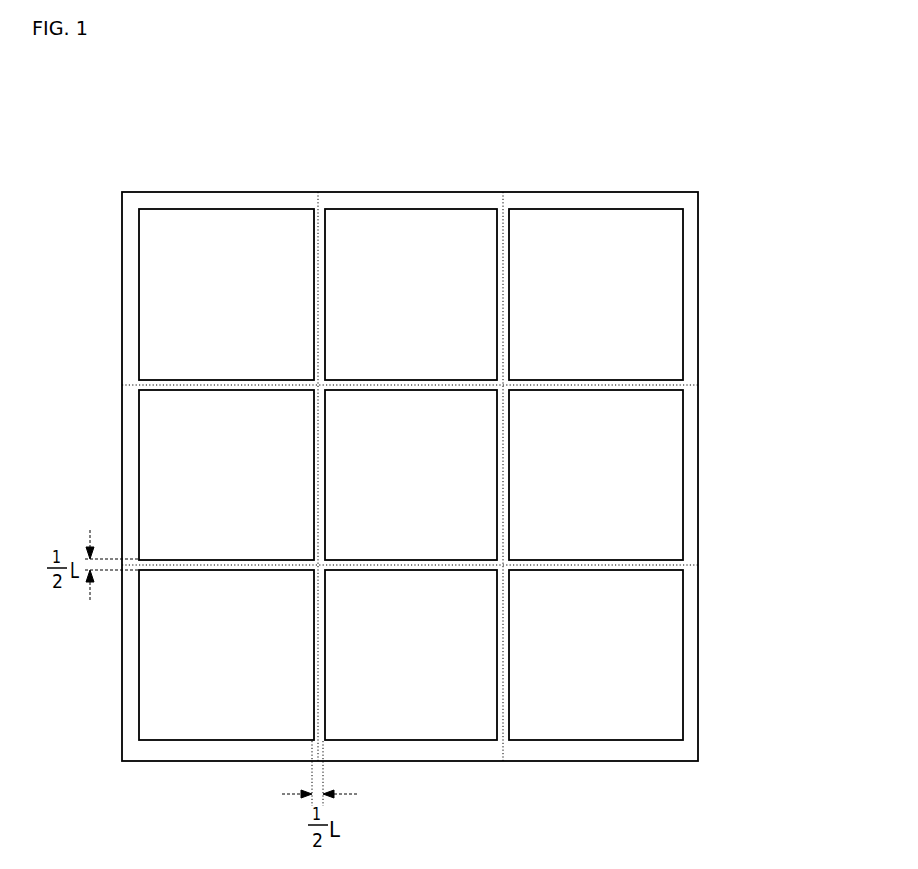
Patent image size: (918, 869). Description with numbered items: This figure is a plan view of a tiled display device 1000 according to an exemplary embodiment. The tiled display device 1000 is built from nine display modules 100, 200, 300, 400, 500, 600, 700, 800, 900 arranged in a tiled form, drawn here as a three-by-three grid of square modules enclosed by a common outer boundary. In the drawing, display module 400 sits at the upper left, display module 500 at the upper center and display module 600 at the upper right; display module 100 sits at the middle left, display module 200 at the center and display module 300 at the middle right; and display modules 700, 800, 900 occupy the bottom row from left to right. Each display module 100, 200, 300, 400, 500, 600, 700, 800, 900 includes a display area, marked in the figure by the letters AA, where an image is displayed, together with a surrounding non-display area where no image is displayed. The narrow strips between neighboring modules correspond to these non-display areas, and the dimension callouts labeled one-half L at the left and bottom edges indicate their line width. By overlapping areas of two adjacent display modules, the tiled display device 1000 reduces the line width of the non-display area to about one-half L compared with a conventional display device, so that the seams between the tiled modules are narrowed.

The tiled display device 1000 is at (432, 129).
The display module 100 is at (147, 487).
The display module 200 is at (408, 420).
The display module 300 is at (660, 478).
The display module 400 is at (147, 267).
The display module 500 is at (362, 223).
The display module 600 is at (670, 302).
The display module 700 is at (213, 720).
The display module 800 is at (428, 715).
The display module 900 is at (620, 727).